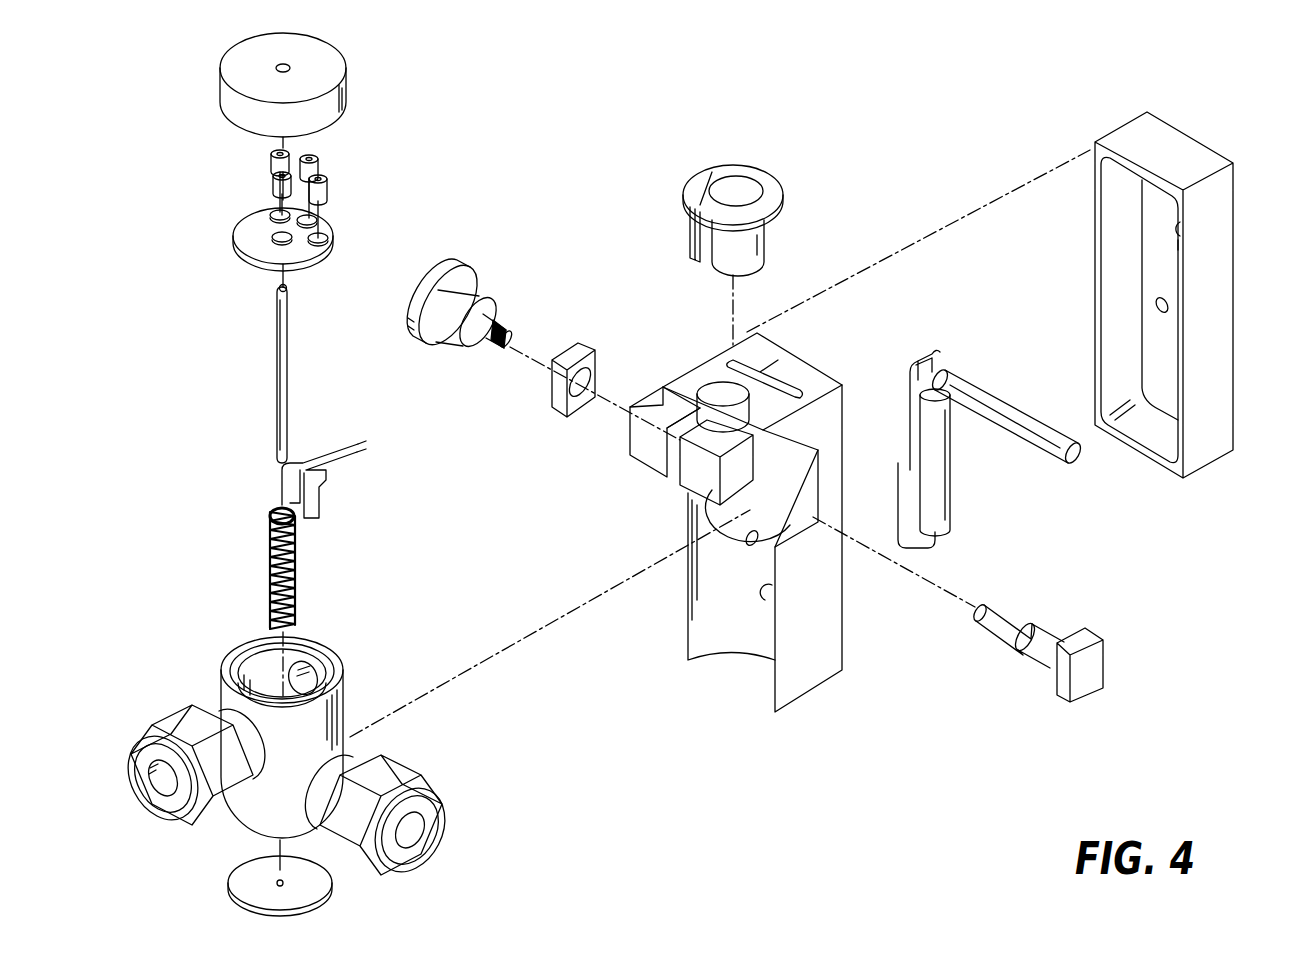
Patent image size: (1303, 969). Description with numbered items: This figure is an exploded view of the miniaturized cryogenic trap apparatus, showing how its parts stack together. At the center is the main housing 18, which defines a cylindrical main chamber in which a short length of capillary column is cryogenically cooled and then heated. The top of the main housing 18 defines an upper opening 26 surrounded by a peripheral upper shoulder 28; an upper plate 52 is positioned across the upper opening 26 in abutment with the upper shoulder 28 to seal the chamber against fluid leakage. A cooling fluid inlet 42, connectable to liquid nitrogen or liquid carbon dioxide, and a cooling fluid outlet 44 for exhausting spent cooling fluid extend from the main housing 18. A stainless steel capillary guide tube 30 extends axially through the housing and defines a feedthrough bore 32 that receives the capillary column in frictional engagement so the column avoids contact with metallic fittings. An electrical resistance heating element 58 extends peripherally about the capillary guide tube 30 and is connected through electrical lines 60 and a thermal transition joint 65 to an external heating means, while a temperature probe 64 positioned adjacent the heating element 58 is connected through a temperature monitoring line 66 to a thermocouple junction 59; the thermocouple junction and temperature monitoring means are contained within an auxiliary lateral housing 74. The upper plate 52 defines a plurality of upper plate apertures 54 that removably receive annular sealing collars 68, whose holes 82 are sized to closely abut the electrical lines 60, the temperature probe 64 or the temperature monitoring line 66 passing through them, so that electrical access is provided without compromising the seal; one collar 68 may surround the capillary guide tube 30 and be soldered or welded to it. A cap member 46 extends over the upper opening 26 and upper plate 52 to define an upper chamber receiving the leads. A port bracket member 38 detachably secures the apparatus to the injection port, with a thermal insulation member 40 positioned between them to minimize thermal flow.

The main housing 18 is at (330, 700).
The upper opening 26 is at (300, 655).
The upper shoulder 28 is at (246, 648).
The capillary guide tube 30 is at (275, 322).
The feedthrough bore 32 is at (279, 288).
The port bracket member 38 is at (688, 380).
The thermal insulation member 40 is at (770, 182).
The cooling fluid inlet 42 is at (180, 718).
The cooling fluid outlet 44 is at (397, 768).
The cap member 46 is at (340, 62).
The upper plate 52 is at (240, 240).
The upper plate apertures 54 is at (325, 238).
The electrical resistance heating element 58 is at (296, 570).
The thermocouple junction 59 is at (1023, 415).
The electrical lines 60 is at (356, 452).
The temperature probe 64 is at (272, 540).
The thermal transition joint 65 is at (940, 495).
The temperature monitoring line 66 is at (318, 460).
The annular sealing collars 68 is at (316, 160).
The auxiliary lateral housing 74 is at (1225, 237).
The holes 82 is at (312, 183).